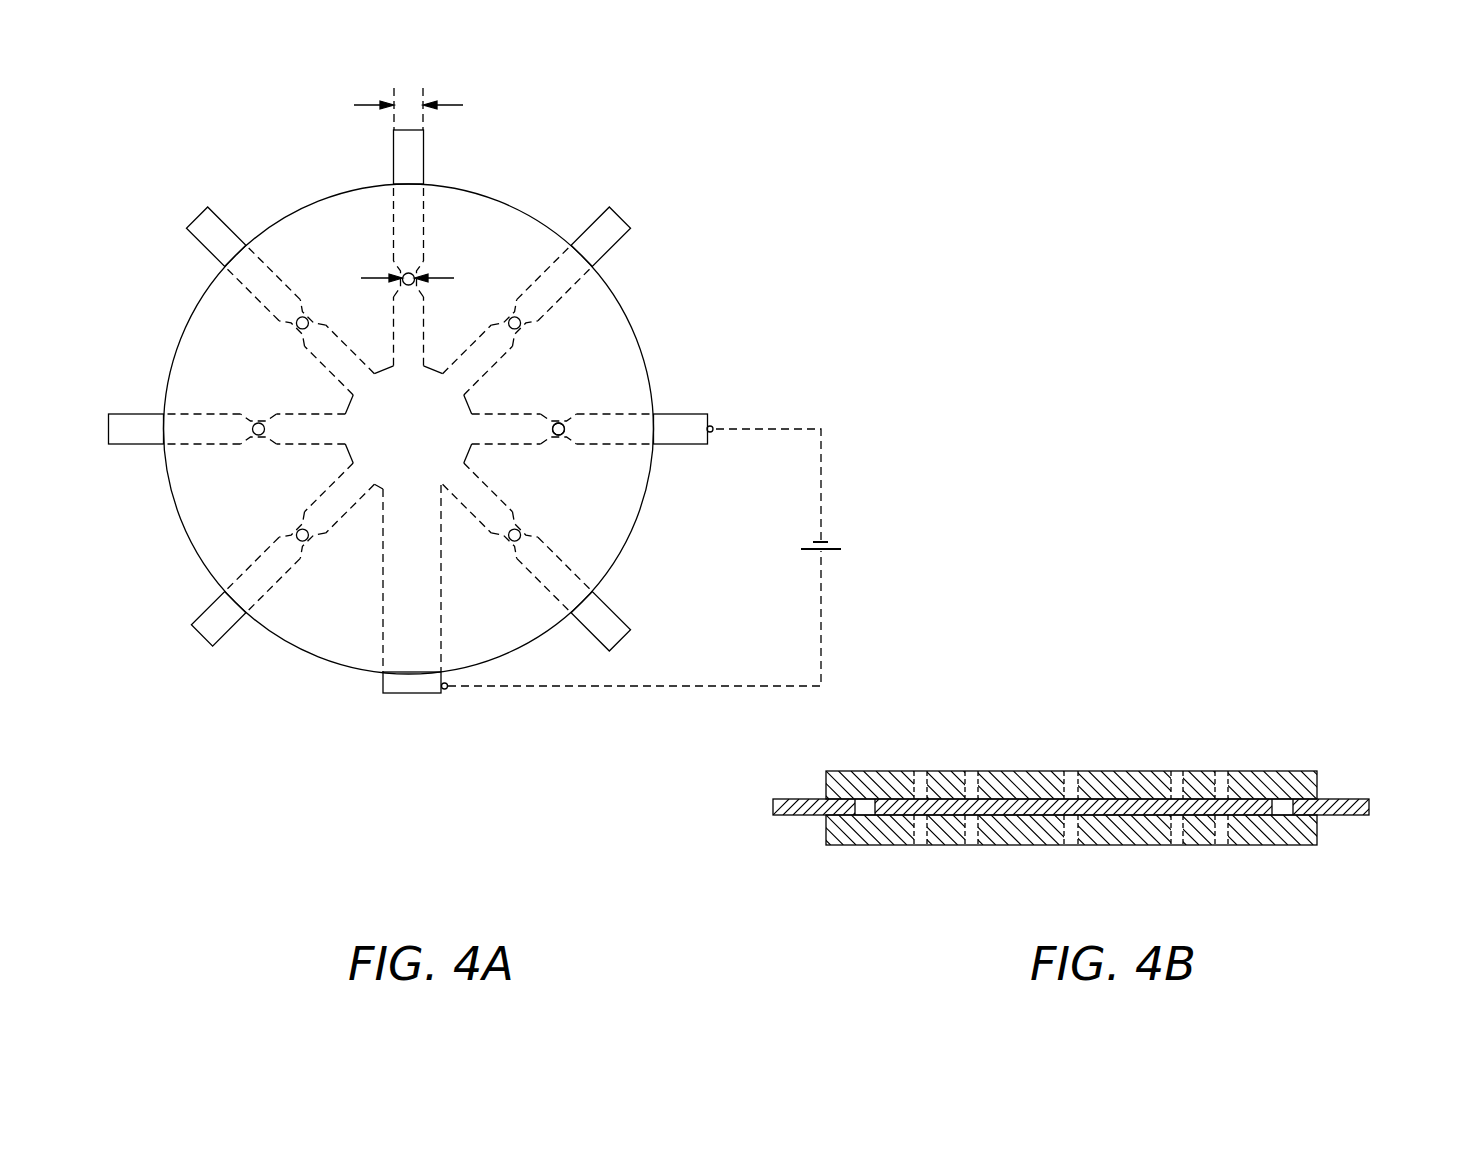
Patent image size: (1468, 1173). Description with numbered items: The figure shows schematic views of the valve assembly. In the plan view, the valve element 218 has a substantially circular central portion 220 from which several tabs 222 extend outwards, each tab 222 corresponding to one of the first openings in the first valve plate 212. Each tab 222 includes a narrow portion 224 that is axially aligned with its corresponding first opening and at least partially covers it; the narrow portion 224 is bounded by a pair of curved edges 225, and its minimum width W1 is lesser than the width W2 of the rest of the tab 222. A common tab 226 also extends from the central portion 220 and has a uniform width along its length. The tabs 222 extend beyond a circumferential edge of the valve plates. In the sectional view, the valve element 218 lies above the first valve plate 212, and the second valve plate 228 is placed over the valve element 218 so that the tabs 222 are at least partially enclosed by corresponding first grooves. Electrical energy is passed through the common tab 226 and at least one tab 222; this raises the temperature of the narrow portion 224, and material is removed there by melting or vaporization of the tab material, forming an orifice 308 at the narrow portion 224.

In FIG. 4A, the central portion 220 is at (390, 437).
In FIG. 4A, the tab 222 is at (194, 216).
In FIG. 4A, the narrow portion 224 is at (306, 312).
In FIG. 4A, the curved edges 225 is at (309, 320).
In FIG. 4A, the common tab 226 is at (412, 694).
In FIG. 4A, the orifice 308 is at (558, 437).
In FIG. 4A, the minimum width of the narrow portion W1 is at (407, 103).
In FIG. 4A, the width of the rest of the tab W2 is at (444, 276).
In FIG. 4B, the second valve plate 228 is at (1289, 769).
In FIG. 4B, the valve element 218 is at (1368, 799).
In FIG. 4B, the first valve plate 212 is at (1307, 848).